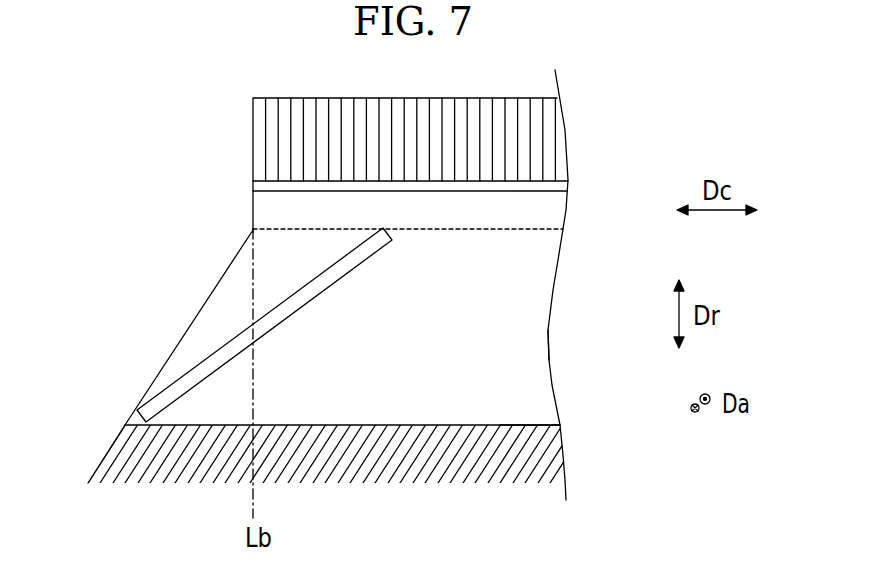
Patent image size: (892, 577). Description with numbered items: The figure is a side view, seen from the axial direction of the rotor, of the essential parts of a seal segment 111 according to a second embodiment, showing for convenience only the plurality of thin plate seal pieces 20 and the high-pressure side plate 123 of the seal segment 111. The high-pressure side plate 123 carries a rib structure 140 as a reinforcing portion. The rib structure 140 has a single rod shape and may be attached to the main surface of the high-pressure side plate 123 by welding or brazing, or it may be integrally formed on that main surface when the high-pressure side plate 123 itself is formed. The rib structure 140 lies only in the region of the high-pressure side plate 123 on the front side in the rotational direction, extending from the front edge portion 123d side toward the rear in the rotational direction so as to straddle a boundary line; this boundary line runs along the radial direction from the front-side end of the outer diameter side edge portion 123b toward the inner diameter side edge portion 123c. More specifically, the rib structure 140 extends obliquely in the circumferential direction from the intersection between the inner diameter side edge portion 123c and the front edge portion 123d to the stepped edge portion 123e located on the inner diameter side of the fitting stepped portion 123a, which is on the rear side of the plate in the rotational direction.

The seal segment 111 is at (681, 99).
The thin plate seal pieces 20 is at (557, 140).
The high-pressure side plate 123 is at (527, 330).
The fitting stepped portion 123a is at (547, 217).
The outer diameter side edge portion 123b is at (550, 192).
The inner diameter side edge portion 123c is at (533, 423).
The front edge portion 123d is at (214, 290).
The stepped edge portion 123e is at (520, 229).
The rib structure 140 is at (225, 345).